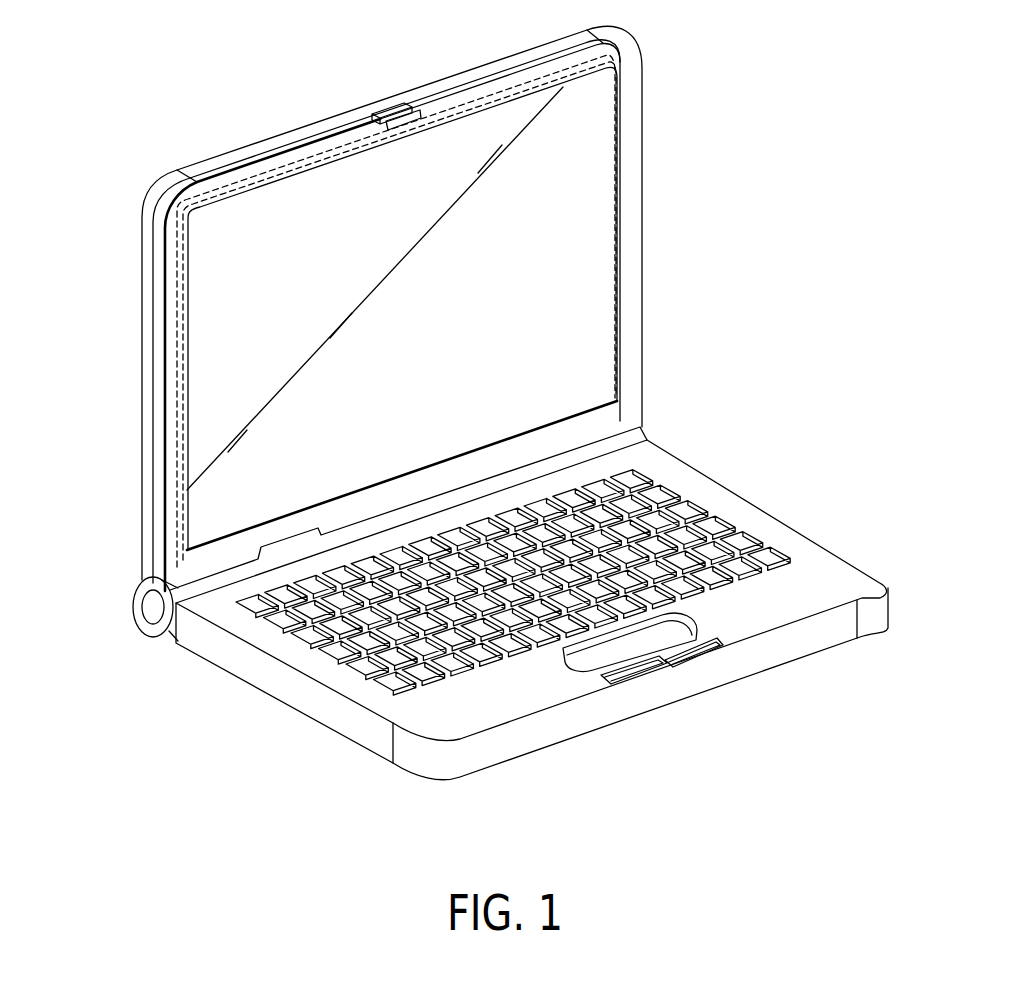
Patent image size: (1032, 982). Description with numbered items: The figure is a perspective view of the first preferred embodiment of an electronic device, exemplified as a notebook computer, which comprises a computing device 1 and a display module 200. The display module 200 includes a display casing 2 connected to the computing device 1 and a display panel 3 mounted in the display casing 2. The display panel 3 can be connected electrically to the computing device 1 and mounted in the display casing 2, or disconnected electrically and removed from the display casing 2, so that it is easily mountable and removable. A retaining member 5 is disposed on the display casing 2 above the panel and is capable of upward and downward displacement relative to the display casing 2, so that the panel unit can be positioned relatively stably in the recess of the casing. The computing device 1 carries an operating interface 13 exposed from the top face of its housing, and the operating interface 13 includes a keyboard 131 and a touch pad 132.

The display module 200 is at (391, 323).
The computing device 1 is at (532, 604).
The display casing 2 is at (647, 150).
The display panel 3 is at (578, 265).
The retaining member 5 is at (391, 103).
The operating interface 13 is at (517, 561).
The keyboard 131 is at (692, 521).
The touch pad 132 is at (662, 636).